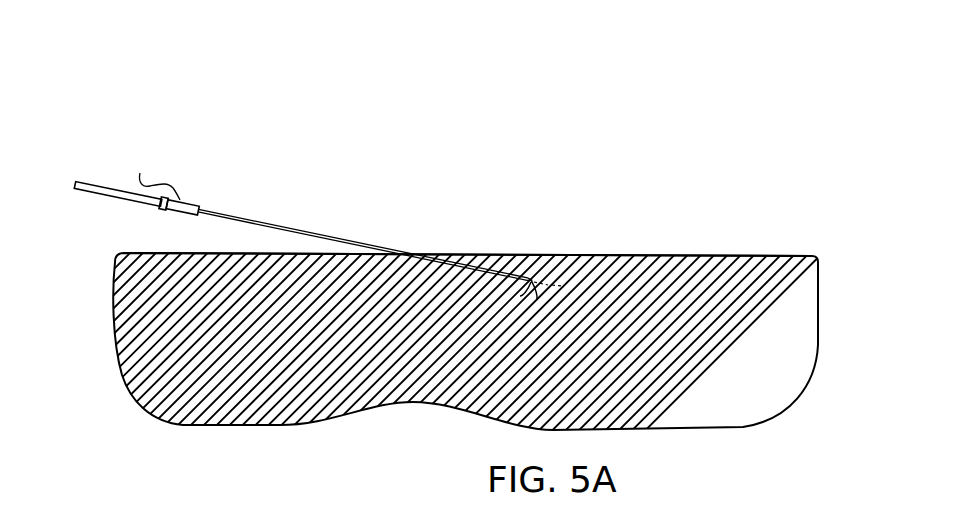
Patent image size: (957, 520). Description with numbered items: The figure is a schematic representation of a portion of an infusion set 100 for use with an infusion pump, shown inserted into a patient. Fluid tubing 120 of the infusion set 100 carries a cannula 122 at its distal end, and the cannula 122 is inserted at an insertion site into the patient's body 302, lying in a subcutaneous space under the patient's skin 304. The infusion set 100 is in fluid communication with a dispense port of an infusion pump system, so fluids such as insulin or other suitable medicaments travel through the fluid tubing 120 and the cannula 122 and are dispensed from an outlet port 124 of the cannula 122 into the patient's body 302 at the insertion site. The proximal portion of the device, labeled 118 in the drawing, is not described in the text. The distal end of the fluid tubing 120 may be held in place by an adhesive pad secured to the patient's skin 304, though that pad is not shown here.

The infusion set 100 is at (165, 18).
The handle 118 is at (128, 191).
The fluid tubing 120 is at (112, 198).
The cannula 122 is at (380, 247).
The outlet port 124 is at (533, 277).
The patient's body 302 is at (739, 351).
The patient's skin 304 is at (720, 256).